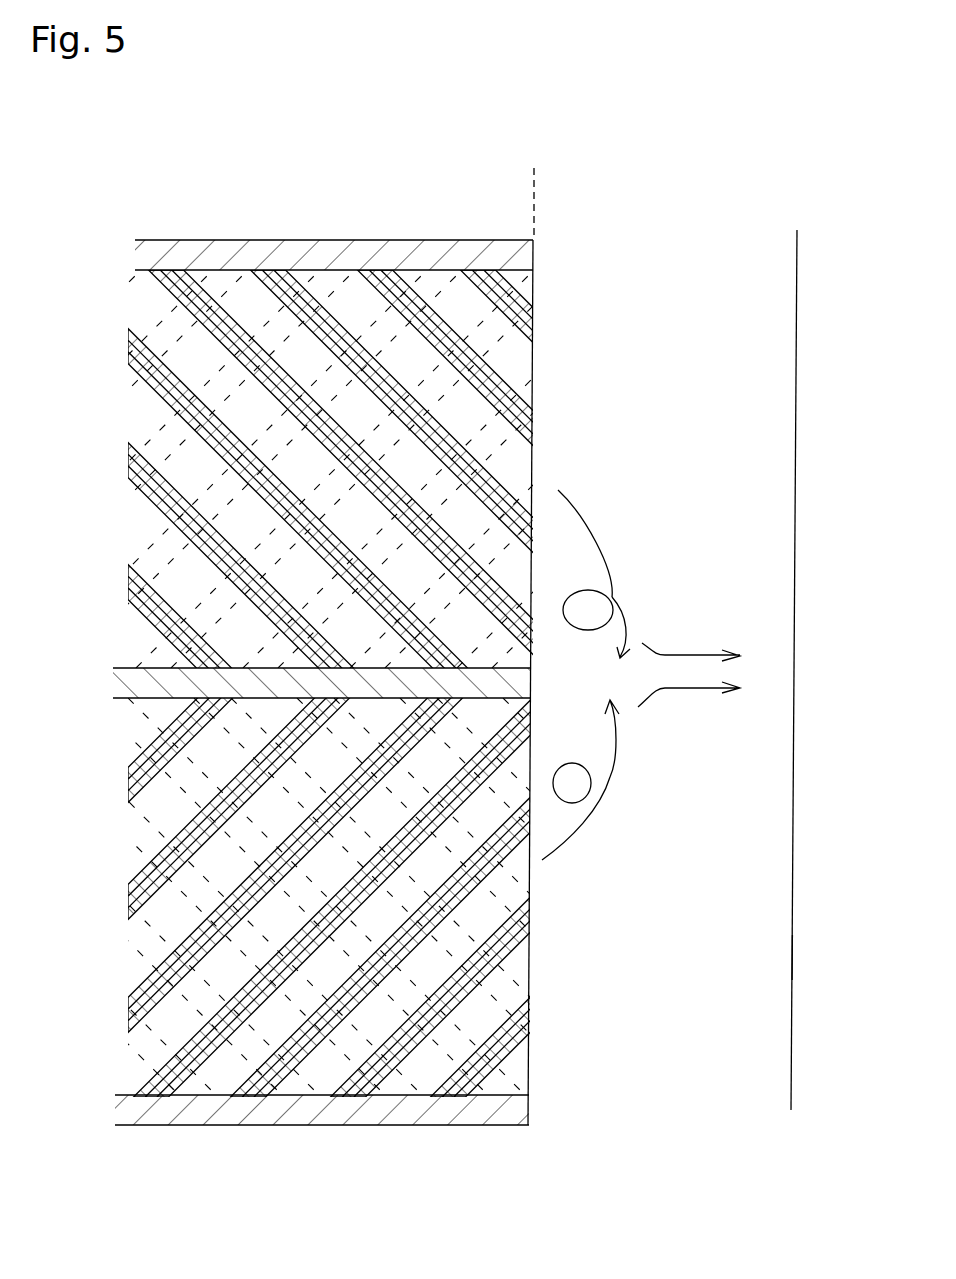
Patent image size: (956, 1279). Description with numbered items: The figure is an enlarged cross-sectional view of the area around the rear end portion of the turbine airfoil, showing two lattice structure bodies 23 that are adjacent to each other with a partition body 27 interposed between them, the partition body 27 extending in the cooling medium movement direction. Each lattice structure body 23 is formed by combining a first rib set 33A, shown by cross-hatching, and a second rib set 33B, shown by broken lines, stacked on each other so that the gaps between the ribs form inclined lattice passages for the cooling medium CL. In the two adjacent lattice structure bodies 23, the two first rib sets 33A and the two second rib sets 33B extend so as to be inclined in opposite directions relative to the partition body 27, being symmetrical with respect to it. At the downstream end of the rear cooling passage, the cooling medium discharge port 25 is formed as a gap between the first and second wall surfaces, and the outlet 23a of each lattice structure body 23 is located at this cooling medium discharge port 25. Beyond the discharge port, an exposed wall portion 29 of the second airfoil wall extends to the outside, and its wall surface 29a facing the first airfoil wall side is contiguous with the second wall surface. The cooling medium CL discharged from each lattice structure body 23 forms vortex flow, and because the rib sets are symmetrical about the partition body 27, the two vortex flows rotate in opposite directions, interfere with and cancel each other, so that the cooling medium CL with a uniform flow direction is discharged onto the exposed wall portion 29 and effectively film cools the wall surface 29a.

The lattice structure body 23 is at (463, 688).
The outlet 23a is at (534, 492).
The cooling medium discharge port 25 is at (534, 178).
The partition body 27 is at (523, 257).
The exposed wall portion 29 is at (797, 357).
The wall surface 29a is at (727, 958).
The first rib set 33A is at (317, 297).
The second rib set 33B is at (467, 327).
The cooling medium CL is at (597, 538).